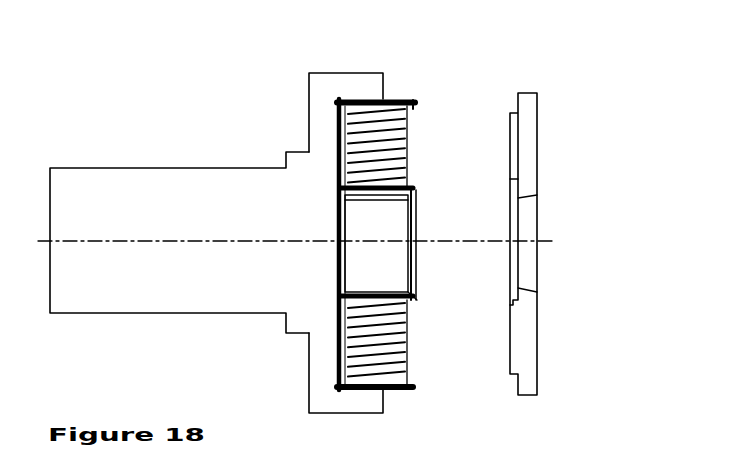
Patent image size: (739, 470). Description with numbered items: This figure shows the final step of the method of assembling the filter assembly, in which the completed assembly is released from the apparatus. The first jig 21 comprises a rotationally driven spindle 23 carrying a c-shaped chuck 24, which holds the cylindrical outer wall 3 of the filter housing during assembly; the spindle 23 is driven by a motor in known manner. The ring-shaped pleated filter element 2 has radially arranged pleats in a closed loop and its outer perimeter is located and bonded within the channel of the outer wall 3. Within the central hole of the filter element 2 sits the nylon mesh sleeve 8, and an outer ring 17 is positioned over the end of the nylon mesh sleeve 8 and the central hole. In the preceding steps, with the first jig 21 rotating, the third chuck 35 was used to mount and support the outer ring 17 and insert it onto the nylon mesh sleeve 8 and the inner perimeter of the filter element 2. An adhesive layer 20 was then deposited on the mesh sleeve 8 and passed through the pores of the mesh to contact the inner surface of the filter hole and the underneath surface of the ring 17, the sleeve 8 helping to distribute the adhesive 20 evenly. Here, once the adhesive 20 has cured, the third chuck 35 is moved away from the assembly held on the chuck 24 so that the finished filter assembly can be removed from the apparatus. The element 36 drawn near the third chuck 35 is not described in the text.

The first jig 21 is at (142, 110).
The spindle 23 is at (212, 198).
The c-shaped chuck 24 is at (322, 388).
The cylindrical outer wall 3 is at (393, 100).
The pleated filter element 2 is at (395, 148).
The nylon mesh sleeve 8 is at (370, 201).
The adhesive layer 20 is at (368, 292).
The outer ring 17 is at (417, 293).
The third chuck 35 is at (527, 152).
The boss 36 is at (515, 197).